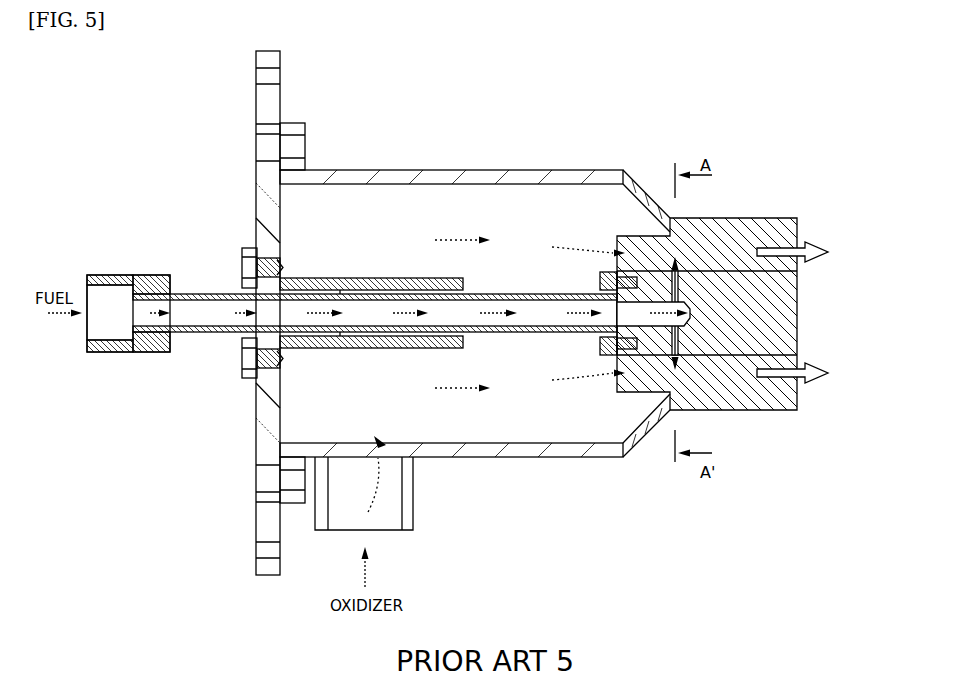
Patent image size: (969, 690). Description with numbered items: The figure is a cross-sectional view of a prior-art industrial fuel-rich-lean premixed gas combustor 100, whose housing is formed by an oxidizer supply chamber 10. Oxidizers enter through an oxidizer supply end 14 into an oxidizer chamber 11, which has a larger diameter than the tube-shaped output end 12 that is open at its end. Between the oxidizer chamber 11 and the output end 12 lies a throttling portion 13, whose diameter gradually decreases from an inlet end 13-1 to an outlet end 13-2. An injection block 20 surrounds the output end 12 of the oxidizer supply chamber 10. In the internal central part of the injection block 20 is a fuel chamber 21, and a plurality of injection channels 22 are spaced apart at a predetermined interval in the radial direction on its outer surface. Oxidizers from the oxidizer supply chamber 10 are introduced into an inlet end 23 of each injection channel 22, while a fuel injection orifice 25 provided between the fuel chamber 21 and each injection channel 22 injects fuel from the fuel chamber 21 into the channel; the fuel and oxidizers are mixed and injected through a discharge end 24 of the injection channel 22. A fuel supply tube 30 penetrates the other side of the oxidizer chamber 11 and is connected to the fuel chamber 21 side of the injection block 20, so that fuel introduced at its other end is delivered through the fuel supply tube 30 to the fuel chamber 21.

The industrial premixed gas combustor 100 is at (538, 75).
The oxidizer supply chamber 10 is at (406, 150).
The oxidizer chamber 11 is at (353, 170).
The output end 12 is at (771, 222).
The throttling portion 13 is at (648, 194).
The inlet end 13-1 is at (623, 170).
The outlet end 13-2 is at (670, 232).
The oxidizer supply end 14 is at (405, 493).
The injection block 20 is at (806, 298).
The fuel chamber 21 is at (693, 314).
The injection channel 22 is at (747, 258).
The inlet end 23 is at (615, 384).
The discharge end 24 is at (797, 390).
The fuel injection orifice 25 is at (668, 334).
The fuel supply tube 30 is at (212, 333).